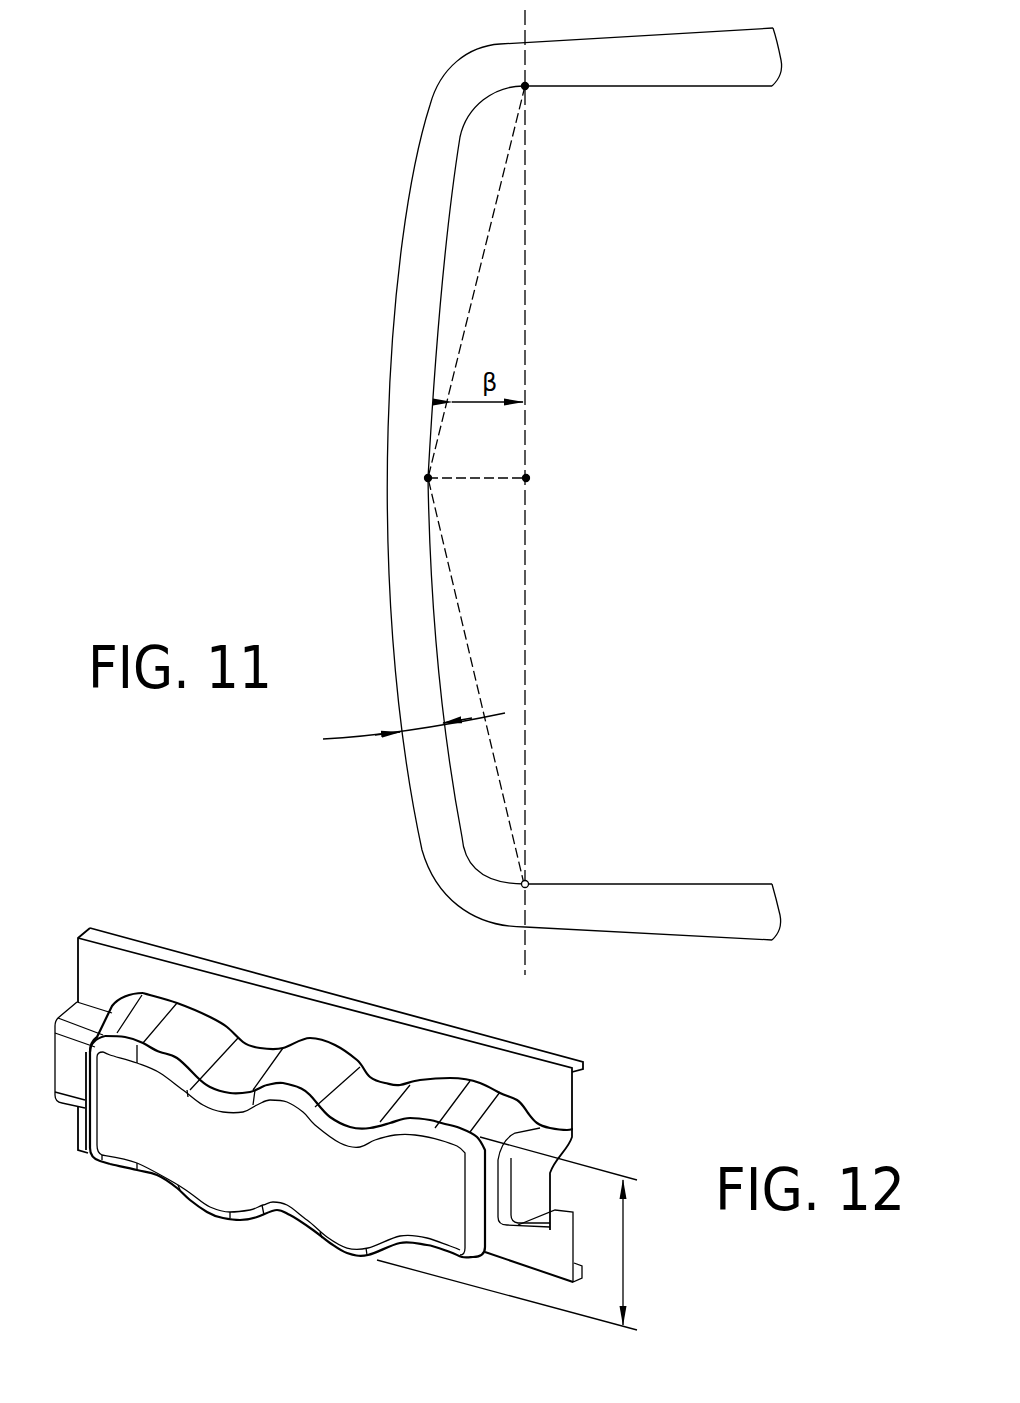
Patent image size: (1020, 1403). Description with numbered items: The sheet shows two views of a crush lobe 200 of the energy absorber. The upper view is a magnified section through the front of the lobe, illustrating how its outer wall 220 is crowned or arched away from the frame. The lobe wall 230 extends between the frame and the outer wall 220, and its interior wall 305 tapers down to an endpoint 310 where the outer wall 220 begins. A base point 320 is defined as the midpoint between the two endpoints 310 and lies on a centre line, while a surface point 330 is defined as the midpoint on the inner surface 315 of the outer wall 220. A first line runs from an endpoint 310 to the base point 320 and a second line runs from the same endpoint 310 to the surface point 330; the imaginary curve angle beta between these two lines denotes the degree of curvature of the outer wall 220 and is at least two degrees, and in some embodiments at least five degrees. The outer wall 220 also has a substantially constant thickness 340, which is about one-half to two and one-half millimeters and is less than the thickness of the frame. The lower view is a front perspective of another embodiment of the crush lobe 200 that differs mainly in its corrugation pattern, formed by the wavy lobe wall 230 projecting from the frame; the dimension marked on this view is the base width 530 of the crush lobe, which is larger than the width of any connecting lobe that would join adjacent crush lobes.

In FIG. 12, the crush lobe 200 is at (168, 930).
In FIG. 11, the outer wall 220 is at (382, 526).
In FIG. 11, the lobe wall 230 is at (789, 38).
In FIG. 11, the interior wall 305 is at (742, 100).
In FIG. 11, the endpoint 310 is at (533, 94).
In FIG. 11, the inner surface 315 is at (440, 275).
In FIG. 11, the base point 320 is at (528, 475).
In FIG. 11, the surface point 330 is at (425, 476).
In FIG. 11, the thickness 340 is at (394, 732).
In FIG. 12, the base width 530 is at (623, 1262).